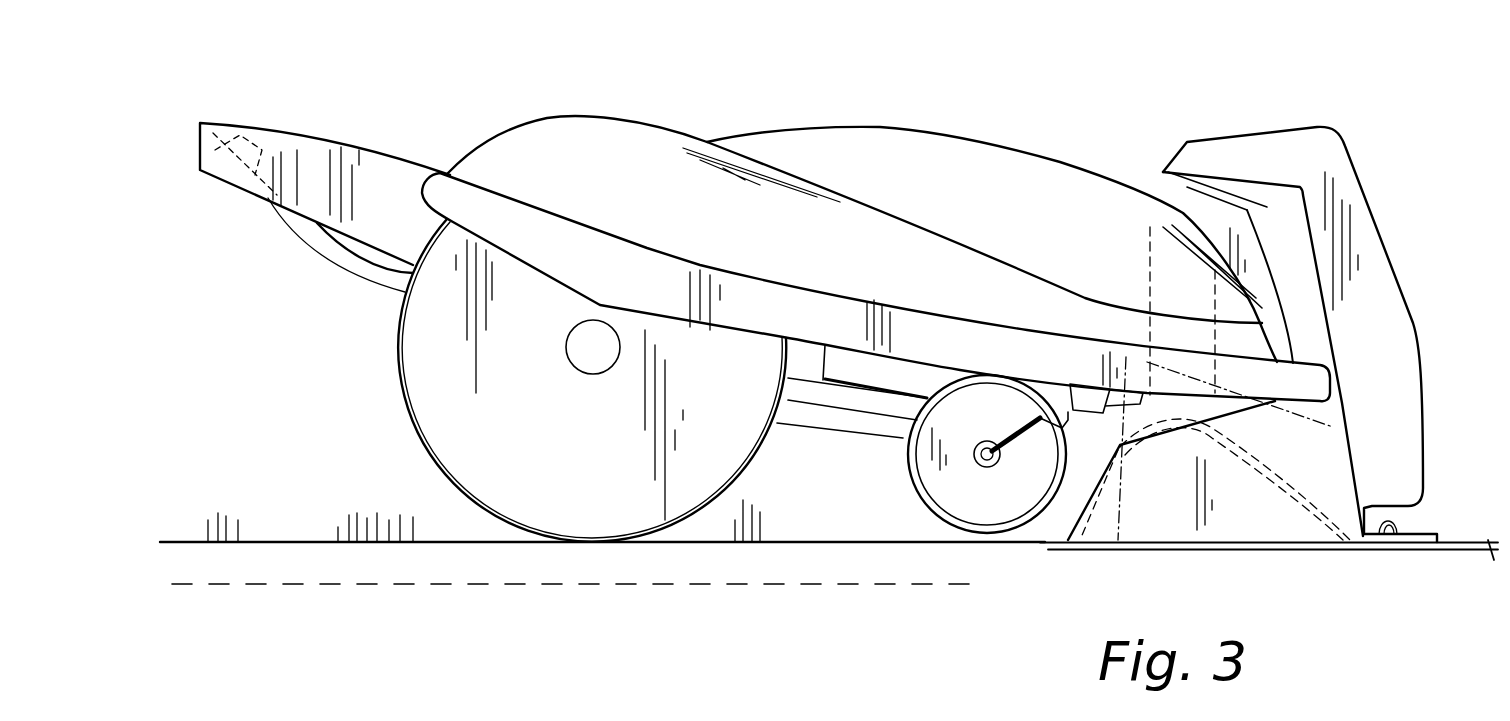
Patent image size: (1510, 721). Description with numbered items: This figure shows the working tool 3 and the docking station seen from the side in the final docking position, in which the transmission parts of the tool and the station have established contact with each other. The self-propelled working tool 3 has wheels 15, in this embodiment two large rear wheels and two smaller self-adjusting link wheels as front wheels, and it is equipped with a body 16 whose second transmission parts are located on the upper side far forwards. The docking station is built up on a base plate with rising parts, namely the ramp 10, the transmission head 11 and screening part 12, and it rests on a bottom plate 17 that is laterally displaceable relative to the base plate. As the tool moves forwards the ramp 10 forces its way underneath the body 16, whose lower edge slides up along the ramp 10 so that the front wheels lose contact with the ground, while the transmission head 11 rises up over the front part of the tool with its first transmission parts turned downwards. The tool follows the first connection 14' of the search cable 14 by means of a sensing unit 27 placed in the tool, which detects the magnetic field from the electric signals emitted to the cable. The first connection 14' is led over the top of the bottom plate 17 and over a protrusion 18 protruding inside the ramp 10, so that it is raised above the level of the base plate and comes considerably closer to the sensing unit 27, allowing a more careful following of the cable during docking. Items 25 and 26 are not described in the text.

The working tool 3 is at (836, 308).
The ramp 10 is at (1209, 497).
The transmission head 11 is at (1317, 291).
The screening part 12 is at (1201, 571).
The search cable 14 is at (575, 609).
The first connection of the search cable 14' is at (1201, 591).
The wheels 15 is at (595, 452).
The body 16 is at (1001, 222).
The bottom plate 17 is at (1456, 541).
The protrusion 18 is at (1222, 500).
The lawn 25 is at (313, 542).
The strut 26 is at (313, 227).
The sensing unit 27 is at (1150, 257).